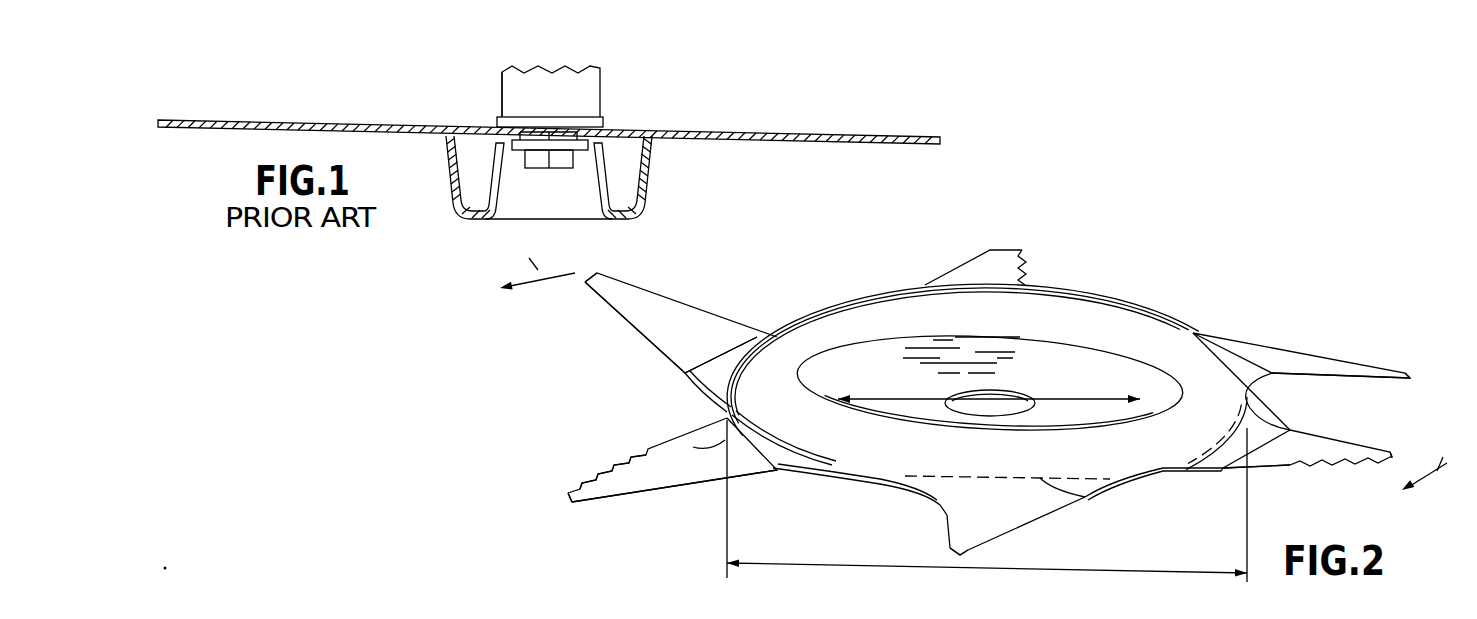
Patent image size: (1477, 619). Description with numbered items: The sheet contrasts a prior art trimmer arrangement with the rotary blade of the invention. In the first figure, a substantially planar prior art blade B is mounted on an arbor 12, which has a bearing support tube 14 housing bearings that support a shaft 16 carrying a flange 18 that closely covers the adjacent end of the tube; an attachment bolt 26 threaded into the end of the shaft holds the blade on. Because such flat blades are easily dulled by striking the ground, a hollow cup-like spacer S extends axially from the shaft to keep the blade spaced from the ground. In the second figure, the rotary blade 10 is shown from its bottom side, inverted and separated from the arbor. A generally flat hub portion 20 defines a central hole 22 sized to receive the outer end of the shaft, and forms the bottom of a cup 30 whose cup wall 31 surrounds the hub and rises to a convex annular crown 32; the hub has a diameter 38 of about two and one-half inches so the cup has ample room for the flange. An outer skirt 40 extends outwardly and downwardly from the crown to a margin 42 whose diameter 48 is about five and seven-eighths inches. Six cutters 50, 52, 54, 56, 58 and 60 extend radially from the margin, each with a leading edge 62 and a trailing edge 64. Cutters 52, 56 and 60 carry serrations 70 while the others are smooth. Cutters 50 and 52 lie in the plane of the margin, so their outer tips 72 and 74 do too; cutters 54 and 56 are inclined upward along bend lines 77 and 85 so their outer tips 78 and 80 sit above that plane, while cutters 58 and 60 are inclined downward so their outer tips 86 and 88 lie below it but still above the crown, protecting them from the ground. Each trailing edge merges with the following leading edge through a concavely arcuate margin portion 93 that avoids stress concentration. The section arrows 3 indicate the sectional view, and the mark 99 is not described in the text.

In FIG. 1, the blade B is at (763, 132).
In FIG. 1, the cup-like spacer S is at (652, 178).
In FIG. 1, the arbor 12 is at (610, 86).
In FIG. 1, the bearing support tube 14 is at (502, 96).
In FIG. 1, the shaft 16 is at (554, 130).
In FIG. 1, the flange 18 is at (604, 122).
In FIG. 1, the attachment bolt 26 is at (560, 168).
In FIG. 2, the rotary blade 10 is at (1232, 271).
In FIG. 2, the hub portion 20 is at (925, 348).
In FIG. 2, the central hole 22 is at (1005, 395).
In FIG. 2, the cup 30 is at (1047, 310).
In FIG. 2, the cup wall 31 is at (1095, 318).
In FIG. 2, the convex annular crown 32 is at (1143, 310).
In FIG. 2, the diameter 38 is at (890, 399).
In FIG. 2, the outer skirt 40 is at (1145, 450).
In FIG. 2, the margin 42 is at (1047, 487).
In FIG. 2, the diameter 48 is at (838, 565).
In FIG. 2, the cutter 50 is at (973, 517).
In FIG. 2, the cutter 52 is at (975, 272).
In FIG. 2, the cutter 54 is at (1308, 358).
In FIG. 2, the cutter 56 is at (630, 487).
In FIG. 2, the cutter 58 is at (671, 305).
In FIG. 2, the cutter 60 is at (1352, 458).
In FIG. 2, the leading edge 62 is at (1350, 378).
In FIG. 2, the trailing edge 64 is at (631, 326).
In FIG. 2, the serrations 70 is at (603, 474).
In FIG. 2, the outer tip 72 is at (962, 558).
In FIG. 2, the outer tip 74 is at (1008, 250).
In FIG. 2, the bend line 77 is at (700, 443).
In FIG. 2, the outer tip 78 is at (1410, 374).
In FIG. 2, the outer tip 80 is at (566, 496).
In FIG. 2, the bend line 85 is at (725, 350).
In FIG. 2, the outer tip 86 is at (588, 278).
In FIG. 2, the outer tip 88 is at (1392, 452).
In FIG. 2, the margin portion 93 is at (725, 413).
In FIG. 2, the reference numeral 99 is at (373, 609).
In FIG. 2, the section line 3- 3 is at (984, 361).